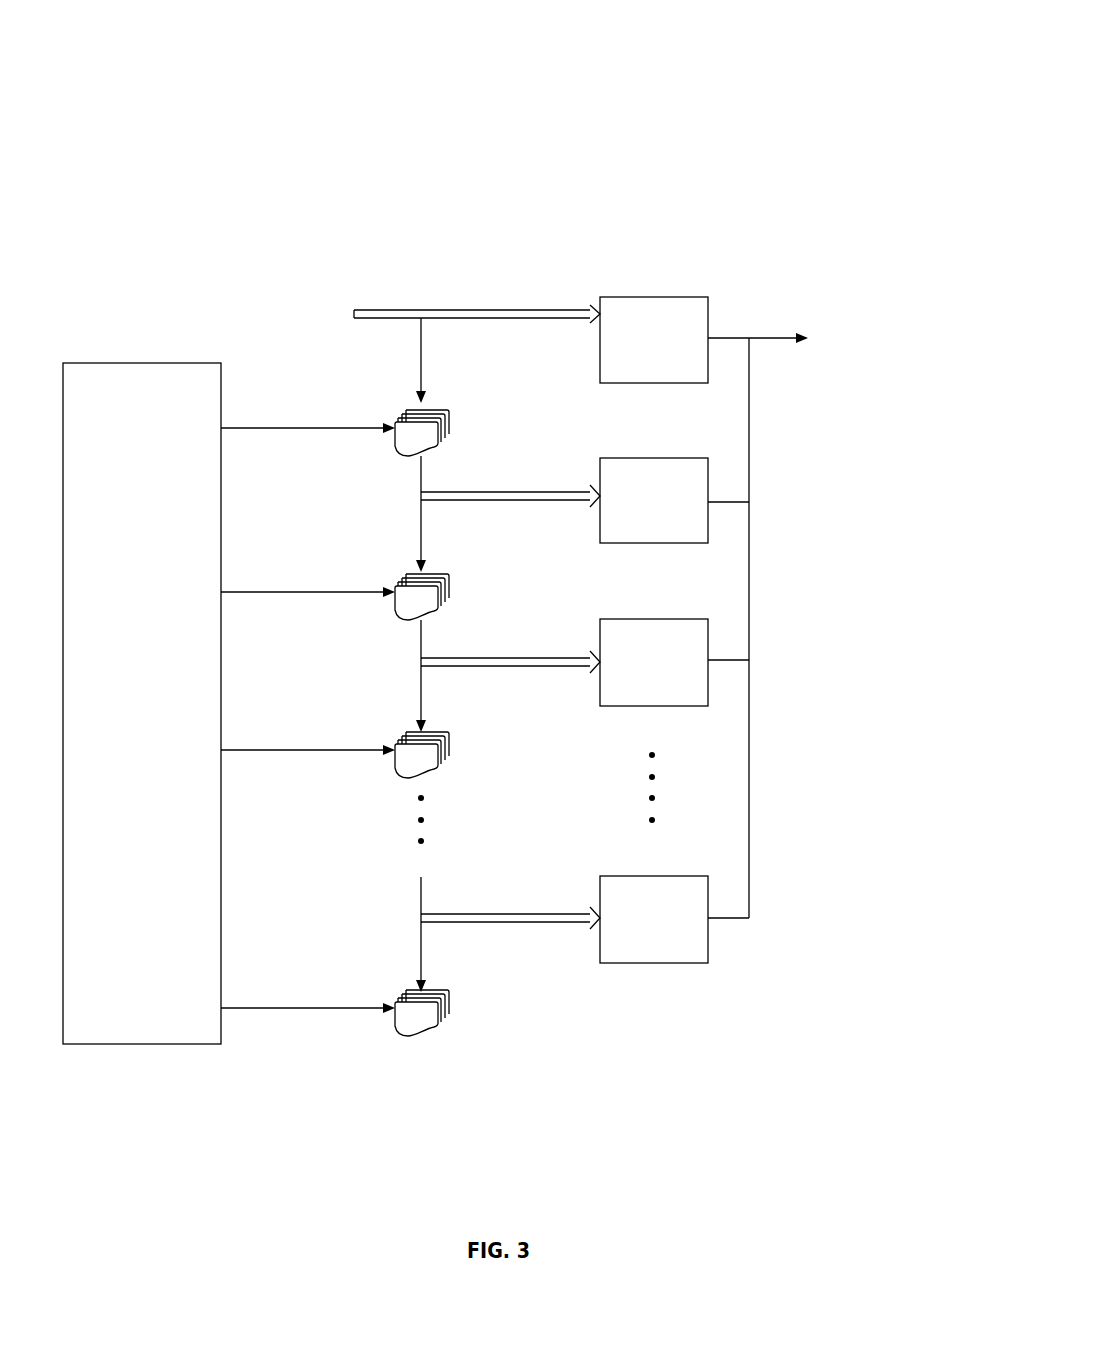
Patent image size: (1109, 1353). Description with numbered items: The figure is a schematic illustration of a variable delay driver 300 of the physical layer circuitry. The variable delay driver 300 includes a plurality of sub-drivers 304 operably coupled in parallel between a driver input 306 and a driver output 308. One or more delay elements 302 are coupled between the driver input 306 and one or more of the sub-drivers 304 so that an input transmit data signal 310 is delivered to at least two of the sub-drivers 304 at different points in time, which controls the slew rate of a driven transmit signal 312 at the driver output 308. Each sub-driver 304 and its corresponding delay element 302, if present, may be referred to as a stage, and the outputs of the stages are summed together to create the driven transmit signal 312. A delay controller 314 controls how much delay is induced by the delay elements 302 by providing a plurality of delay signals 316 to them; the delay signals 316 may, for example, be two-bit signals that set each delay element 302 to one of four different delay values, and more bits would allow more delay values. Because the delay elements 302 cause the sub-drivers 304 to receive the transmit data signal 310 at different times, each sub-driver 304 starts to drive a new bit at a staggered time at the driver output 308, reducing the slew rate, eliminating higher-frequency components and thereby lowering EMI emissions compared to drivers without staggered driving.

The variable delay driver 300 is at (875, 66).
The delay elements 302 is at (393, 440).
The sub-drivers 304 is at (645, 296).
The driver input 306 is at (443, 308).
The driver output 308 is at (762, 345).
The transmit data signal 310 is at (256, 297).
The driven transmit signal 312 is at (856, 297).
The delay controller 314 is at (97, 363).
The delay signals 316 is at (303, 428).